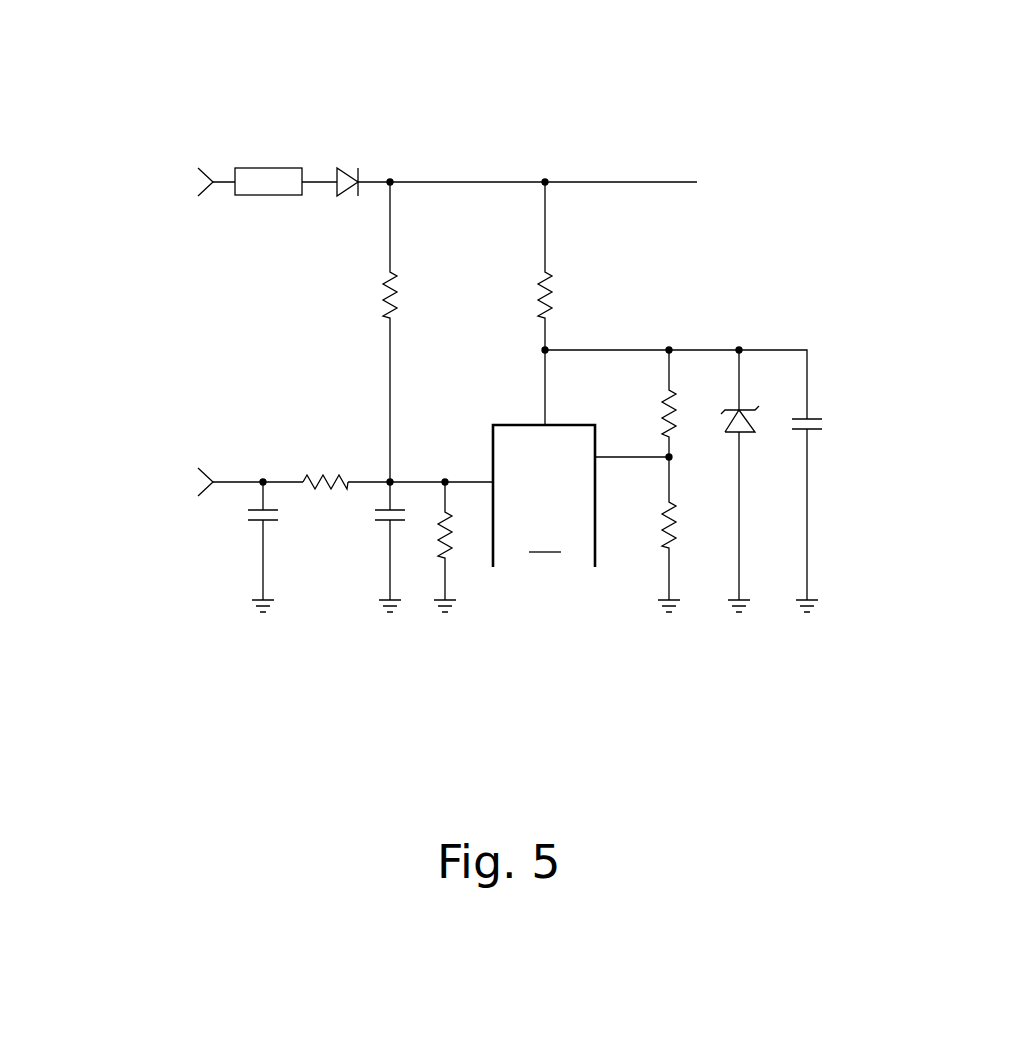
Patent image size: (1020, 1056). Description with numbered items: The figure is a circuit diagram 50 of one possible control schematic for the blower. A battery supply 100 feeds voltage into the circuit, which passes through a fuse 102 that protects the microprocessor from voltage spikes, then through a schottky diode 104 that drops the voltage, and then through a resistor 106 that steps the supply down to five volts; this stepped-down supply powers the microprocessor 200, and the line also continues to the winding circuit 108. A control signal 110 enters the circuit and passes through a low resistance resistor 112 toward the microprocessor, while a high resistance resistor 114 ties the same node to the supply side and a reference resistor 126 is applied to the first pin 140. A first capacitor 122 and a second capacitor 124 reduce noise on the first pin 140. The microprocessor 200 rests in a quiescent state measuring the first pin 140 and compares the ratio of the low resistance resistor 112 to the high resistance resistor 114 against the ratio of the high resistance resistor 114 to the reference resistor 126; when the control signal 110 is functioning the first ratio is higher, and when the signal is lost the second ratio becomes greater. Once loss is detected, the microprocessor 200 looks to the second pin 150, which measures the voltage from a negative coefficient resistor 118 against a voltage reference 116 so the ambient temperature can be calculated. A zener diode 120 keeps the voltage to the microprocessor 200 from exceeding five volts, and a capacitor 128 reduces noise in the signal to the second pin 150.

The circuit diagram 50 is at (727, 97).
The battery supply 100 is at (133, 225).
The fuse 102 is at (248, 108).
The schottky diode 104 is at (350, 108).
The resistor 106 is at (567, 293).
The to winding circuit output 108 is at (813, 238).
The control signal 110 is at (135, 526).
The low resistance resistor 112 is at (370, 458).
The high resistance resistor 114 is at (382, 290).
The voltage reference 116 is at (683, 390).
The negative coefficient resistor 118 is at (682, 523).
The zener diode 120 is at (757, 400).
The first capacitor 122 is at (240, 548).
The second capacitor 124 is at (372, 548).
The reference resistor 126 is at (544, 581).
The capacitor 128 is at (832, 408).
The first pin 140 is at (430, 545).
The second pin 150 is at (615, 468).
The microprocessor 200 is at (545, 542).